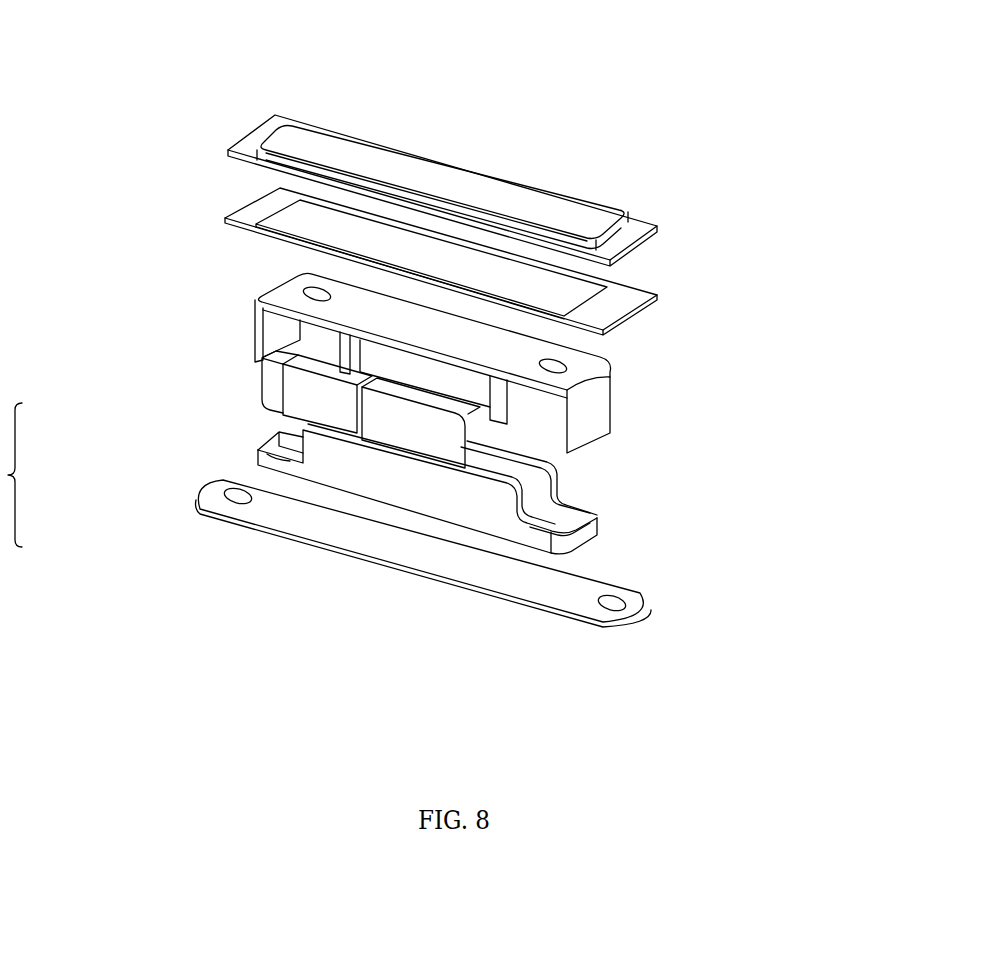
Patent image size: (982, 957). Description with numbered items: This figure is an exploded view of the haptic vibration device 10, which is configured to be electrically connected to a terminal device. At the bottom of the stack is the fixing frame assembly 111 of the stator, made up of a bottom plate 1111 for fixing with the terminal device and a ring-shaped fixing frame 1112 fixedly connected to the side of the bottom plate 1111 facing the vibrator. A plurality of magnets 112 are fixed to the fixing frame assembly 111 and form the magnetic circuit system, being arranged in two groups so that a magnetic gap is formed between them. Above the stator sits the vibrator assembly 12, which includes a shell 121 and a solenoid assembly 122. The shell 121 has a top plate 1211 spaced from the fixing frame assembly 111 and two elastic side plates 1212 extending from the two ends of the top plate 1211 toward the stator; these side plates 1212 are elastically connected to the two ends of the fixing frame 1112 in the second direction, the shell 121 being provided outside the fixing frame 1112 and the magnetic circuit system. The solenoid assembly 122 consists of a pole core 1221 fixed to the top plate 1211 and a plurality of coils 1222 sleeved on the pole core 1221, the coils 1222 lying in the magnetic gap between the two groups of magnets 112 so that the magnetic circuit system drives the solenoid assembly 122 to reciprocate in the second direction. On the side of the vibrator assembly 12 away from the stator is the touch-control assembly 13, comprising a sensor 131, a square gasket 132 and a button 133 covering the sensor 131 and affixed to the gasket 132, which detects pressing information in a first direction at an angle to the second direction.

The haptic vibration device 10 is at (204, 35).
The touch-control assembly 13 is at (786, 45).
The button 133 is at (543, 185).
The sensor 131 is at (572, 260).
The gasket 132 is at (627, 299).
The vibrator assembly 12 is at (871, 330).
The shell 121 is at (791, 308).
The top plate 1211 is at (536, 353).
The side plates 1212 is at (609, 408).
The solenoid assembly 122 is at (791, 443).
The pole core 1221 is at (479, 387).
The coils 1222 is at (524, 410).
The magnets 112 is at (289, 396).
The fixing frame assembly 111 is at (86, 458).
The bottom plate 1111 is at (264, 507).
The fixing frame 1112 is at (264, 465).